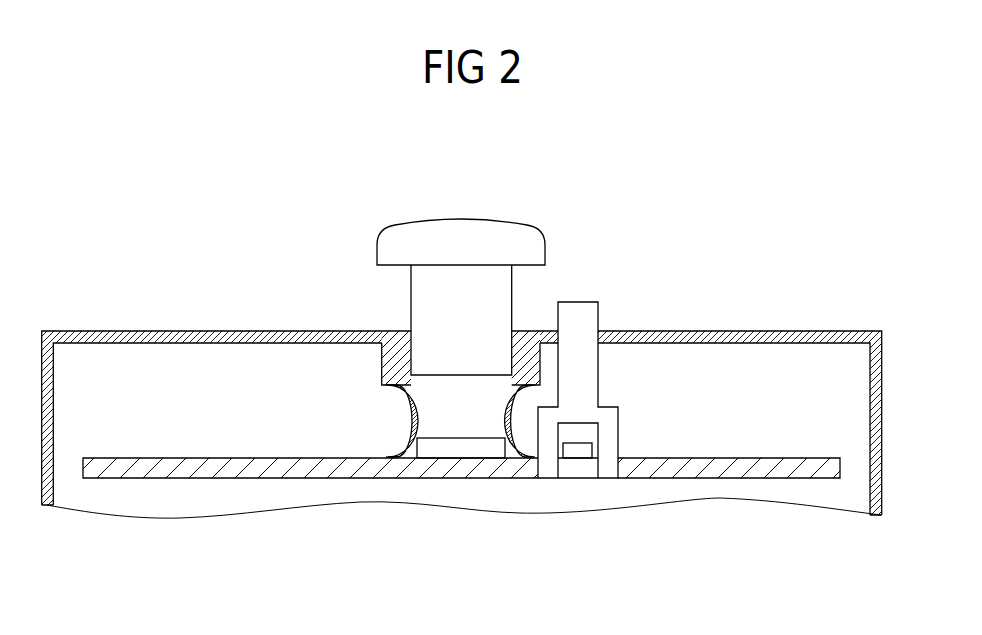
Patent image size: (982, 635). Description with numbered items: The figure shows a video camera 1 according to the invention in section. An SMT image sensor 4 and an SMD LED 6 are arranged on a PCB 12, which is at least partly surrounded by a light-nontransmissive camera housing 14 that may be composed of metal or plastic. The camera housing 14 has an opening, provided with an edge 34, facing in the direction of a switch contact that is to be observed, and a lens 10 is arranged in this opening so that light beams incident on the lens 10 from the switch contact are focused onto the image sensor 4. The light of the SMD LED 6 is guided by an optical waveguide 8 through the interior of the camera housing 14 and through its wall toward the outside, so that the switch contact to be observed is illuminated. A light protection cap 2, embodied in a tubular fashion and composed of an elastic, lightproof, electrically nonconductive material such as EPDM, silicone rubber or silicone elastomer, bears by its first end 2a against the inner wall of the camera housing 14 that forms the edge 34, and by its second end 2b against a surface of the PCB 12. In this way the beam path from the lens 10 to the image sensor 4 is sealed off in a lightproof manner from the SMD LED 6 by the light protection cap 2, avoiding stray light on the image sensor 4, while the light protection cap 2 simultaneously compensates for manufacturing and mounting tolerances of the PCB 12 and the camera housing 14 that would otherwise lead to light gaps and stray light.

The video camera 1 is at (175, 216).
The light protection cap 2 is at (398, 421).
The first end 2a is at (385, 388).
The second end 2b is at (385, 455).
The SMT image sensor 4 is at (465, 452).
The SMD LED 6 is at (573, 450).
The optical waveguide 8 is at (577, 325).
The lens 10 is at (460, 230).
The PCB 12 is at (768, 468).
The camera housing 14 is at (817, 336).
The edge 34 is at (397, 356).